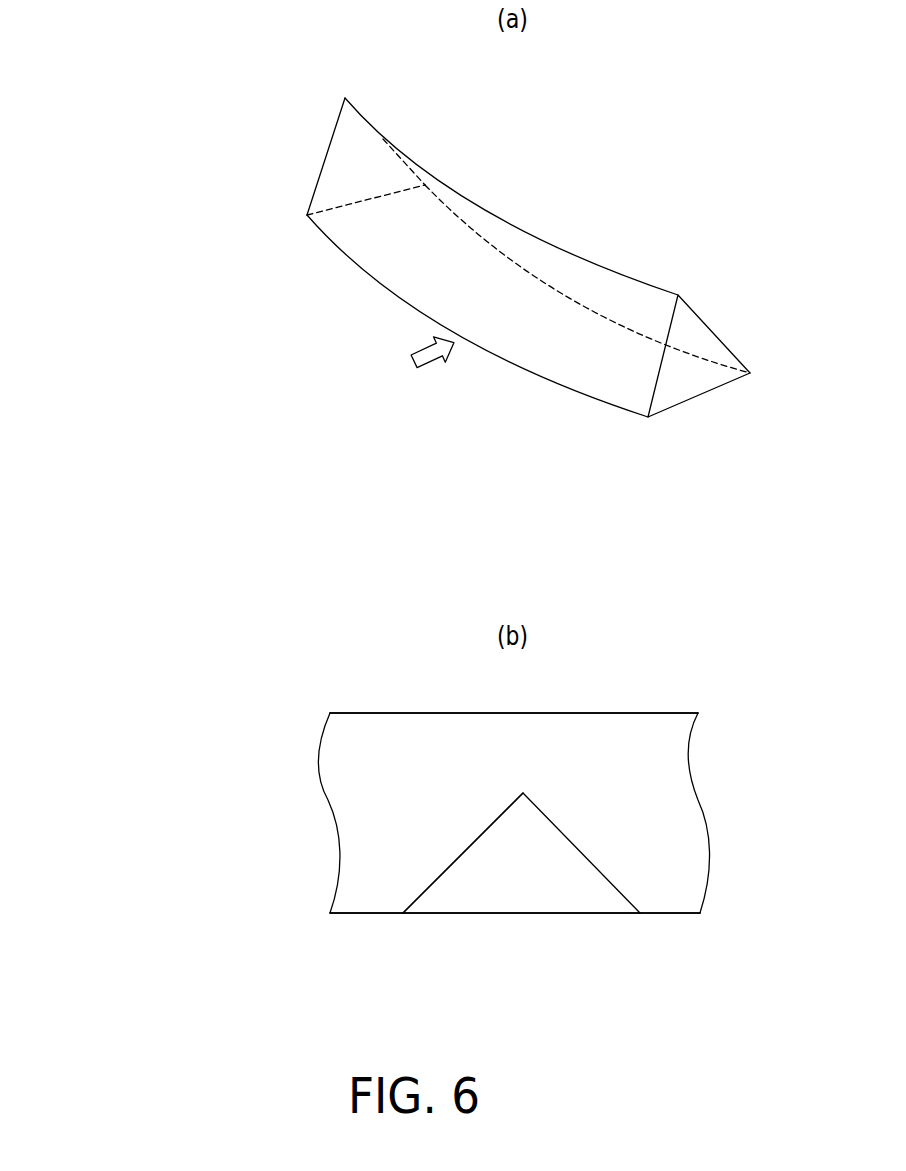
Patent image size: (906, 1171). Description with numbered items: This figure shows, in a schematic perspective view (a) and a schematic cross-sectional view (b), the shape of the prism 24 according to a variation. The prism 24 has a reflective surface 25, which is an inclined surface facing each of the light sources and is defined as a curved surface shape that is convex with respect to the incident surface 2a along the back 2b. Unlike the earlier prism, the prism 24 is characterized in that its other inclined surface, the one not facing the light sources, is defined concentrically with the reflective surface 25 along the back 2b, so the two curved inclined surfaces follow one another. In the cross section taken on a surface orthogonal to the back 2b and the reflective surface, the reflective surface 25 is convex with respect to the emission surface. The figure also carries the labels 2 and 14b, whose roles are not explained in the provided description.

The light guide plate 2 is at (692, 868).
The incident surface 2a is at (379, 583).
The back 2b is at (680, 917).
The curved surface of prism 14b is at (647, 307).
The prism 24 is at (697, 434).
The reflective surface 25 is at (597, 360).